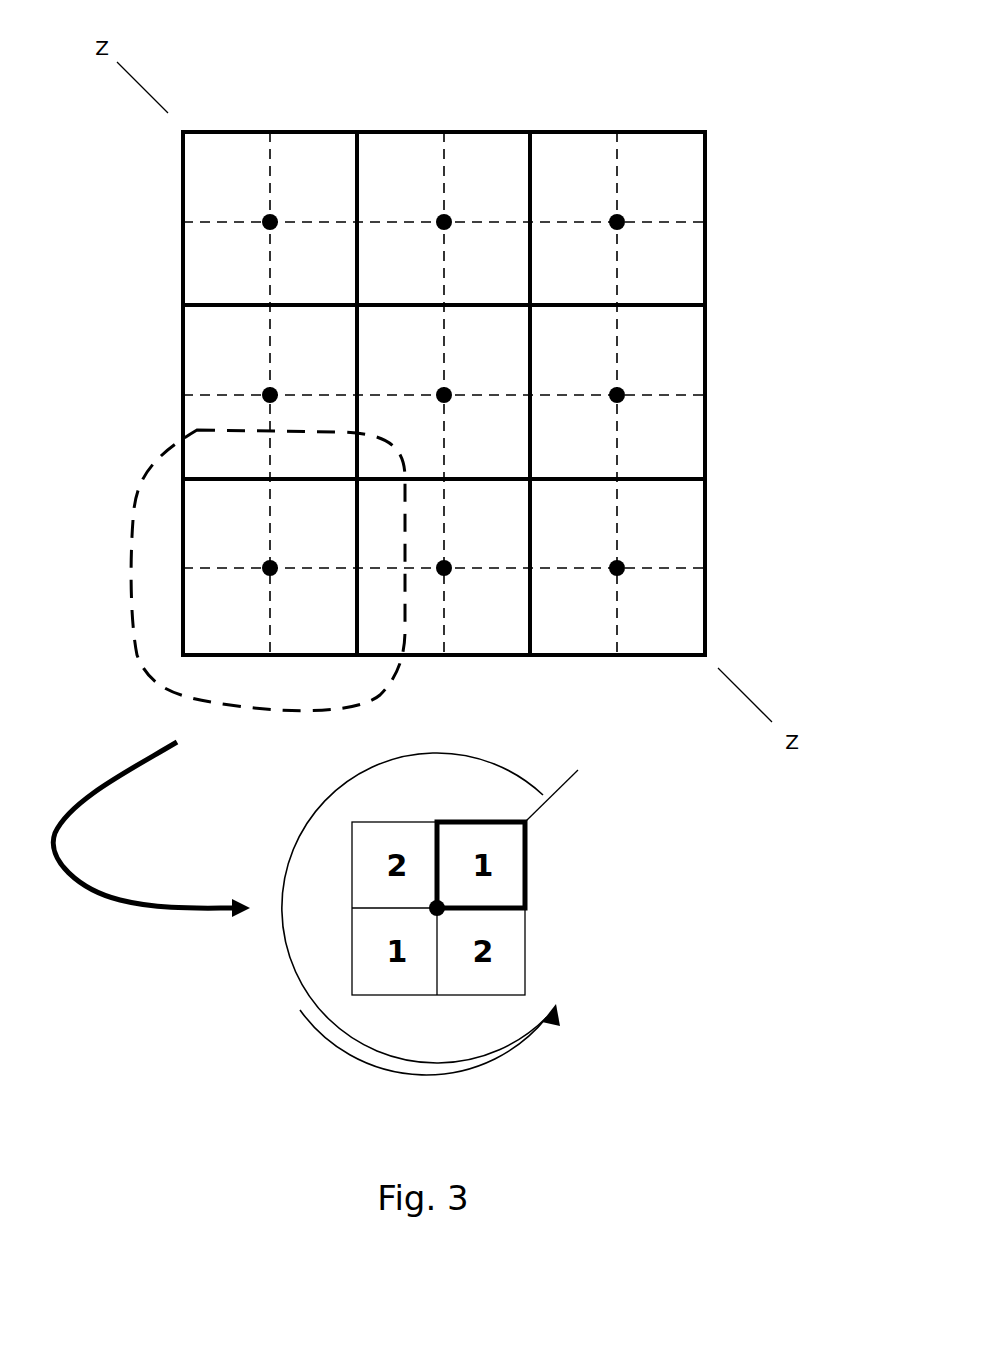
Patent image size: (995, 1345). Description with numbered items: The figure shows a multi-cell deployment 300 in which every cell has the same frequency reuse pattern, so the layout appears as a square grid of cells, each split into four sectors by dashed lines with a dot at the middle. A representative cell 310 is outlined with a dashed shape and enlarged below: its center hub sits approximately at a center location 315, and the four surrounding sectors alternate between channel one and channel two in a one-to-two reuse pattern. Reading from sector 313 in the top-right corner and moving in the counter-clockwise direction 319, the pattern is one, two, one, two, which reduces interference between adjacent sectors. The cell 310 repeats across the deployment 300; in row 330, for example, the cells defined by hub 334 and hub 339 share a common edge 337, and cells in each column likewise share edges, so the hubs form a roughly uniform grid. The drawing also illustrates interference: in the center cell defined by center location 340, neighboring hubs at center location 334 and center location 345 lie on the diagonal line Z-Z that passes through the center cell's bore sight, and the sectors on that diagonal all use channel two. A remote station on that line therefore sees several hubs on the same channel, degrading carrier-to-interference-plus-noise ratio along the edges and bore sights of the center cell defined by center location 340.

The multi-cell deployment 300 is at (722, 255).
The cell 310 is at (130, 478).
The sector 313 is at (542, 858).
The center location 315 is at (440, 912).
The counter-clockwise direction 319 is at (522, 1047).
The row 330 is at (133, 132).
The hub 334 is at (273, 219).
The common edge 337 is at (362, 165).
The hub 339 is at (446, 220).
The center location 340 is at (446, 393).
The center location 345 is at (620, 566).